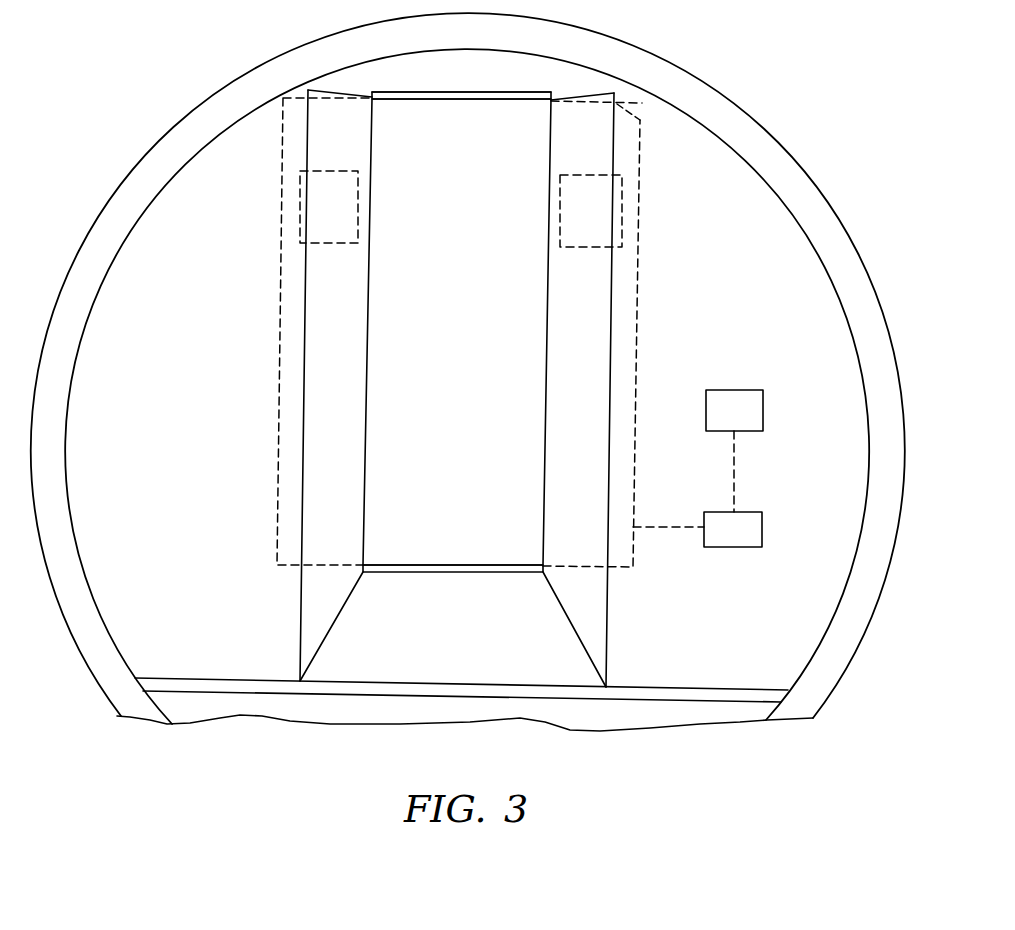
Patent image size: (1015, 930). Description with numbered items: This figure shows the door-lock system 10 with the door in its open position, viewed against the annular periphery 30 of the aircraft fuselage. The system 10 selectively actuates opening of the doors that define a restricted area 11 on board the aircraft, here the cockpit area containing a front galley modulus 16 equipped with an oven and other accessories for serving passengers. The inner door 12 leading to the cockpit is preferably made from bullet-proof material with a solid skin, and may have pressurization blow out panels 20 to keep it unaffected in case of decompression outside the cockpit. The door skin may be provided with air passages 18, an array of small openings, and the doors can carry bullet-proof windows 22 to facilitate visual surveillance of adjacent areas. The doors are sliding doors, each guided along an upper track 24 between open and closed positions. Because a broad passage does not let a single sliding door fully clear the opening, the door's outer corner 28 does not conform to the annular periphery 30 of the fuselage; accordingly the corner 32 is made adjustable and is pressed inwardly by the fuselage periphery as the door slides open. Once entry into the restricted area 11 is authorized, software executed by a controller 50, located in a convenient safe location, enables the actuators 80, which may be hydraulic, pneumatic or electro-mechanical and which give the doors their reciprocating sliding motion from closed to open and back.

The door-lock system 10 is at (897, 126).
The restricted area 11 is at (457, 476).
The inner door 12 is at (633, 480).
The front galley modulus 16 is at (872, 305).
The air passages 18 is at (495, 100).
The pressurization blow out panels 20 is at (487, 575).
The bullet-proof windows 22 is at (622, 228).
The upper track 24 is at (508, 90).
The outer corner 28 is at (283, 98).
The annular periphery 30 is at (708, 137).
The corner 32 is at (644, 104).
The controller 50 is at (750, 423).
The actuators 80 is at (748, 543).